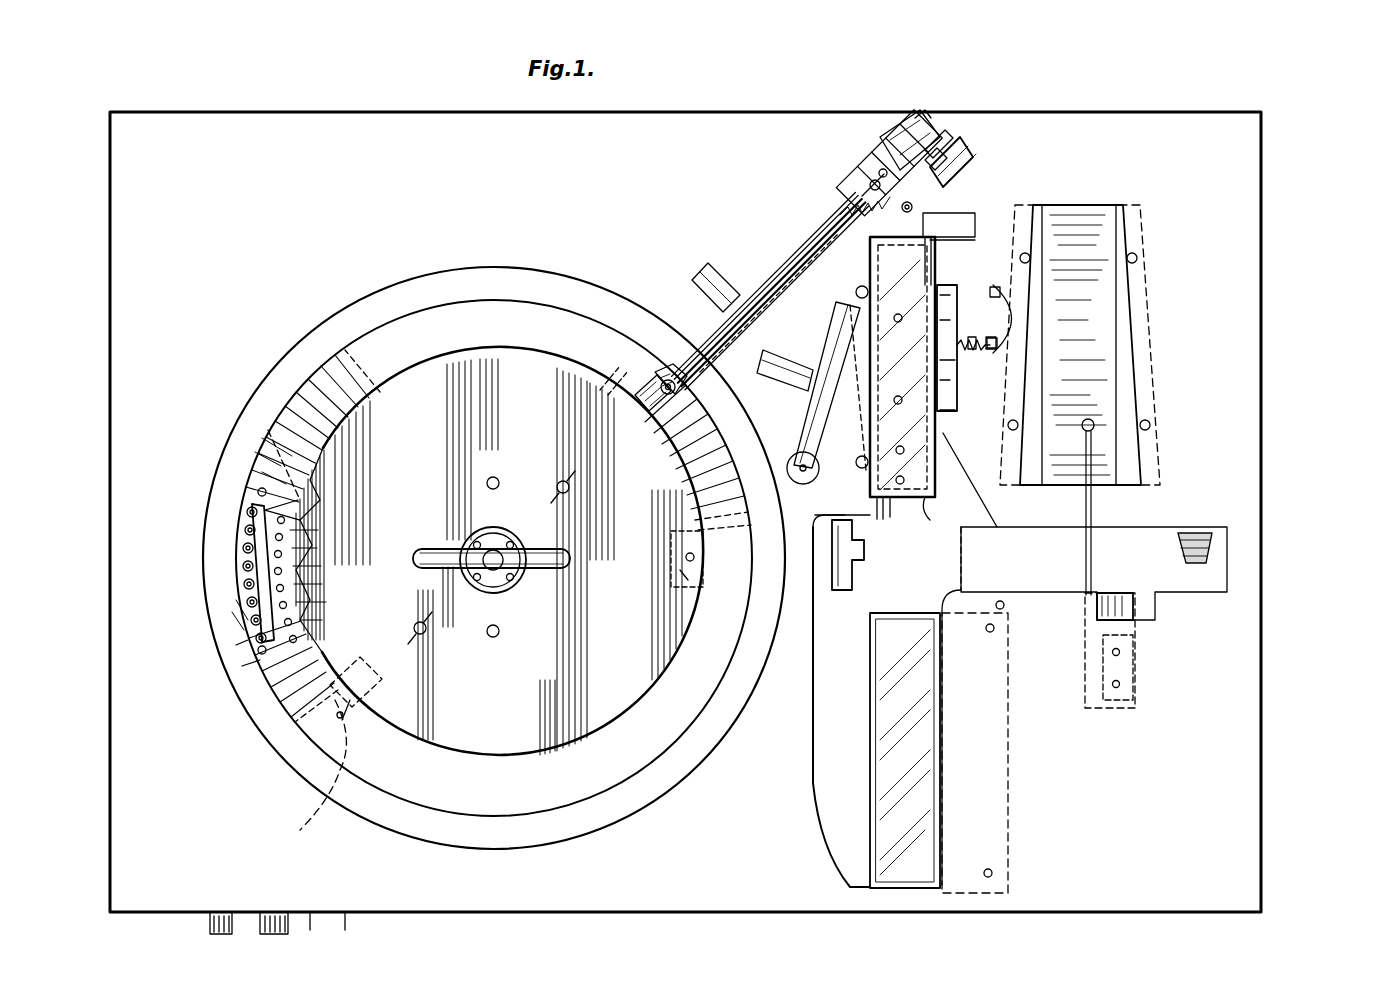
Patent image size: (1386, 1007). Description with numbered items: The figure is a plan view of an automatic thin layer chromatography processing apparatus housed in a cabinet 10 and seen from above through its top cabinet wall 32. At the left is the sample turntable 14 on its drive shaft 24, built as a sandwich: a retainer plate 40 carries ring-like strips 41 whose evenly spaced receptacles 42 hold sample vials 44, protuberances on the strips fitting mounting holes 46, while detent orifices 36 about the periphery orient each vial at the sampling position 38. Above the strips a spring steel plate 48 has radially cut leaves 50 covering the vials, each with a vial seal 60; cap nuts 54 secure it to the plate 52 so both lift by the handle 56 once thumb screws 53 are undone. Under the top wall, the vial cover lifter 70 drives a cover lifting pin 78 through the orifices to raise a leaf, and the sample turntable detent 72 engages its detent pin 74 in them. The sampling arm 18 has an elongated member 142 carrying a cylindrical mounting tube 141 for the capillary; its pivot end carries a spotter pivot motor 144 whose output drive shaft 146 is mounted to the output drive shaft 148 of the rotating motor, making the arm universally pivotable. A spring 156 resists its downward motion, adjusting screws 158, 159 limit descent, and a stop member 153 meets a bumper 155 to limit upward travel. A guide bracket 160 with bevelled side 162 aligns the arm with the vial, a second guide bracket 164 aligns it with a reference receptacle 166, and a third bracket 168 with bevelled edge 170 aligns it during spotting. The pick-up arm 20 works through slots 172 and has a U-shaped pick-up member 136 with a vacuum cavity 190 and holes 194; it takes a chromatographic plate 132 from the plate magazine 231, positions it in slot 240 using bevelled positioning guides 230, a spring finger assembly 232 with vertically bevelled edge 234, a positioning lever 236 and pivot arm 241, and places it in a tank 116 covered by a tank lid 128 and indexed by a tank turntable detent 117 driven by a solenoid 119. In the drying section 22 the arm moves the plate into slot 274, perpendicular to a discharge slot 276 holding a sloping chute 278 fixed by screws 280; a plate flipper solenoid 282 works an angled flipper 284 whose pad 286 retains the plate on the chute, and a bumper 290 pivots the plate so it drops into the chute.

The cabinet 10 is at (1265, 385).
The sample turntable 14 is at (402, 285).
The pivotable sampling arm 18 is at (825, 212).
The pivotable pick-up arm 20 is at (940, 430).
The drying section 22 is at (1100, 230).
The drive shaft 24 is at (497, 568).
The top cabinet wall 32 is at (1200, 868).
The detent orifices 36 is at (265, 546).
The sampling position 38 is at (688, 396).
The retainer plate 40 is at (245, 683).
The ring-like strips 41 is at (250, 592).
The receptacles 42 is at (248, 580).
The sample vials 44 is at (244, 530).
The mounting holes 46 is at (260, 490).
The spring steel plate 48 is at (262, 402).
The leaves 50 is at (300, 400).
The plate 52 is at (434, 456).
The thumb screws 53 is at (570, 476).
The cap nuts 54 is at (500, 484).
The lift handle 56 is at (440, 548).
The vial seal 60 is at (268, 430).
The leaf spring vial cover lifter 70 is at (602, 392).
The sample turntable detent 72 is at (320, 745).
The detent pin 74 is at (318, 768).
The cover lifting pin 78 is at (656, 428).
The tank 116 is at (866, 560).
The tank turntable detent 117 is at (682, 552).
The solenoid 119 is at (682, 574).
The tank lid 128 is at (836, 592).
The chromatographic plate 132 is at (939, 565).
The U-shaped pick-up member 136 is at (1069, 705).
The cylindrical mounting tube 141 is at (690, 378).
The elongated member 142 is at (785, 262).
The spotter pivot motor 144 is at (962, 164).
The output drive shaft 146 is at (938, 215).
The output drive shaft 148 is at (945, 135).
The stop member 153 is at (912, 148).
The bumper 155 is at (928, 130).
The spring 156 is at (890, 165).
The adjusting screw 158 is at (872, 182).
The adjusting screw 159 is at (858, 196).
The spotter positioning guide bracket 160 is at (695, 282).
The bevelled side 162 is at (760, 292).
The spotter positioning guide bracket 164 is at (800, 392).
The reference receptacle 166 is at (805, 484).
The spotter positioning bracket 168 is at (970, 235).
The bevelled edge 170 is at (945, 242).
The slots 172 is at (815, 775).
The U-shaped vacuum cavity 190 is at (948, 410).
The holes 194 is at (958, 355).
The bevelled positioning guides 230 is at (856, 288).
The plate magazine 231 is at (870, 730).
The spring finger assembly 232 is at (950, 380).
The vertically bevelled edge 234 is at (952, 300).
The positioning lever 236 is at (870, 440).
The slot 240 is at (949, 506).
The pivot arm 241 is at (876, 502).
The slot 274 is at (1112, 538).
The discharge slot 276 is at (1095, 302).
The chute 278 is at (1125, 362).
The screws 280 is at (1137, 256).
The plate flipper solenoid 282 is at (1125, 670).
The flipper 284 is at (1128, 614).
The pad 286 is at (1094, 422).
The bumper 290 is at (1010, 300).